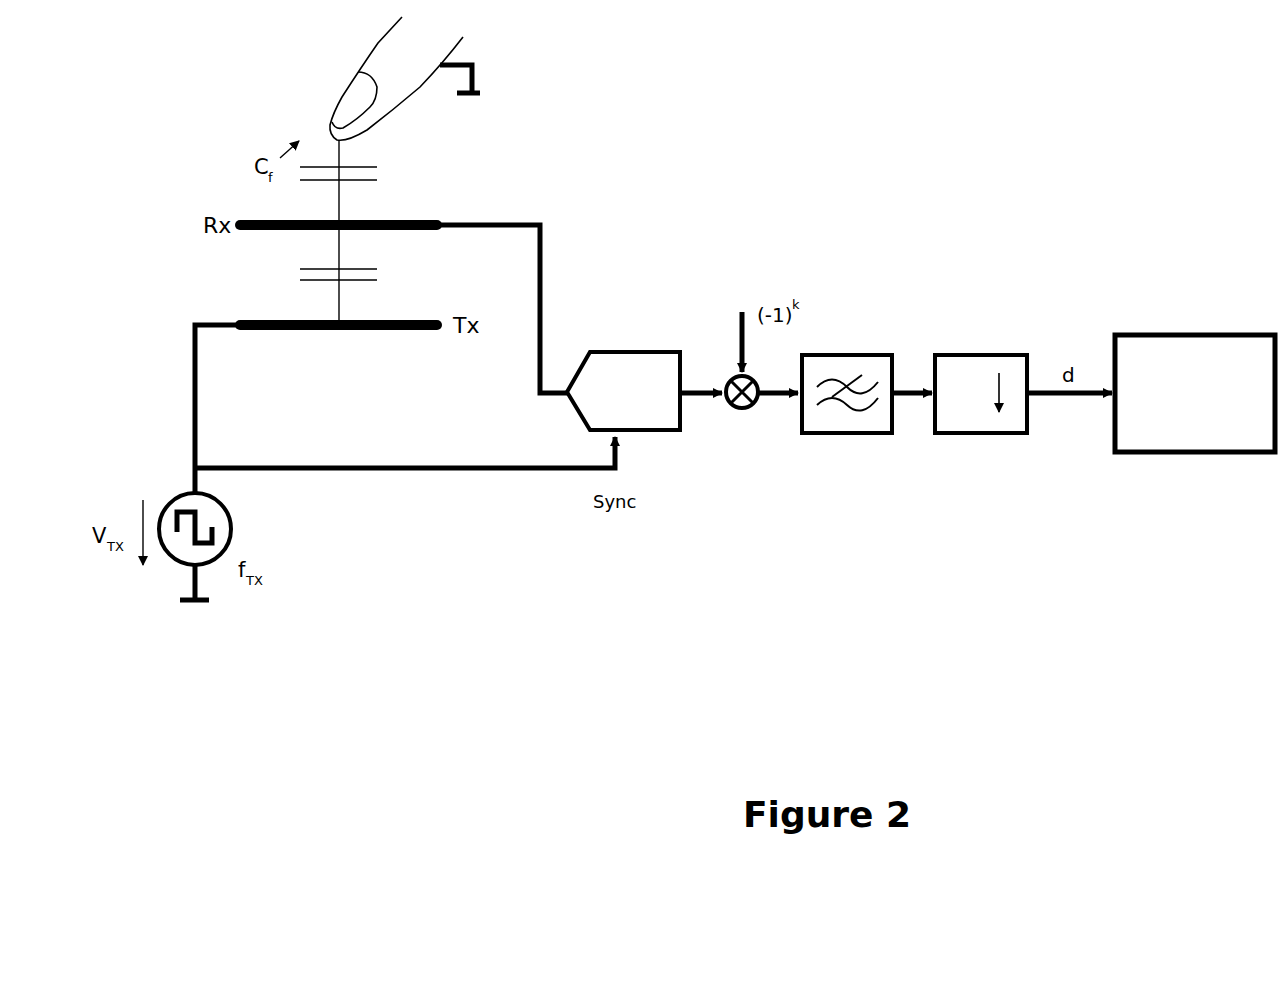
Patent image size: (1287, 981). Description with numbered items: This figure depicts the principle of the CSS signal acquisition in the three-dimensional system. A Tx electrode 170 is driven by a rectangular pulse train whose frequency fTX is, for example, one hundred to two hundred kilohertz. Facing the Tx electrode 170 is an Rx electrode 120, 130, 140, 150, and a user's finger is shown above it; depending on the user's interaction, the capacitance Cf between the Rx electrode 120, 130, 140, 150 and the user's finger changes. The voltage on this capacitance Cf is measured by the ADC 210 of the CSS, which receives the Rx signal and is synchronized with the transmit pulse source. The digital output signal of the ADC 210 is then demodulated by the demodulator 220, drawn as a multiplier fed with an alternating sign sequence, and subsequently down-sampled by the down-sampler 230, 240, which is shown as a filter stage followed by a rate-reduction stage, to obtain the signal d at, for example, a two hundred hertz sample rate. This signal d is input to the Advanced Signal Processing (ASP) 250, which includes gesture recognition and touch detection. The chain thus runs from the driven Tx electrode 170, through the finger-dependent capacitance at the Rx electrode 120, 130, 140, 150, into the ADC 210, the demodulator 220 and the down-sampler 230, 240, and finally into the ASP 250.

The Rx electrode 120 is at (400, 200).
The Rx electrode 130 is at (434, 199).
The Rx electrode 140 is at (434, 199).
The Rx electrode 150 is at (434, 199).
The Tx electrode 170 is at (357, 330).
The ADC 210 is at (620, 352).
The demodulator 220 is at (735, 410).
The down-sampler 230 is at (853, 355).
The down-sampler 240 is at (967, 355).
The Advanced Signal Processing (ASP) 250 is at (1178, 335).